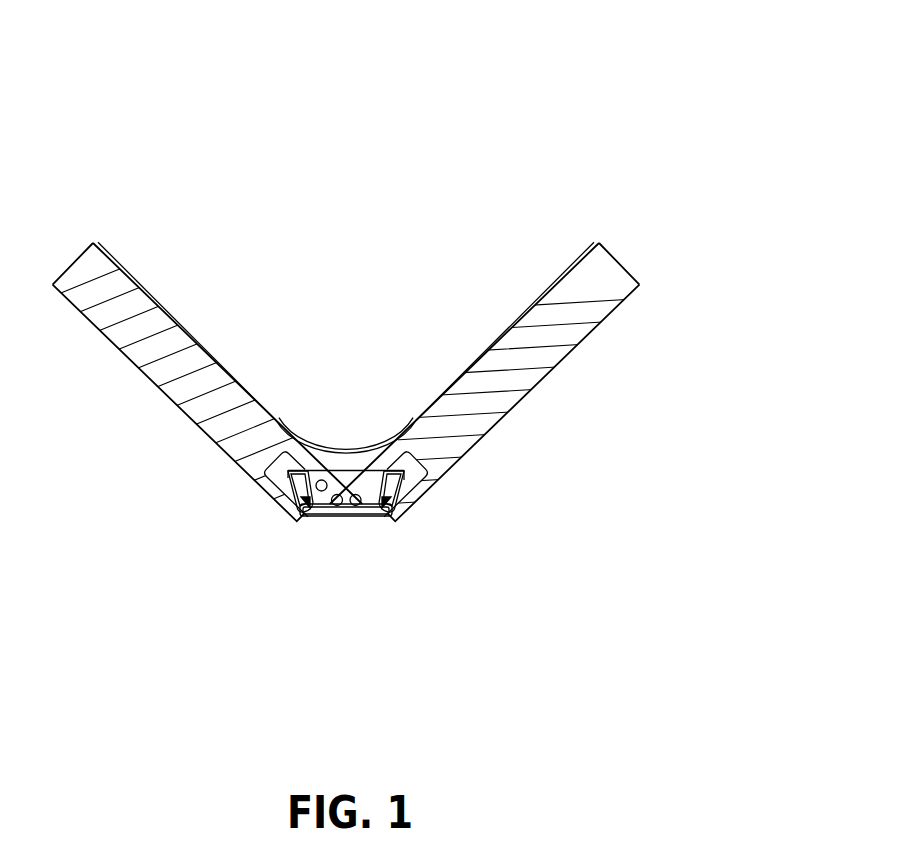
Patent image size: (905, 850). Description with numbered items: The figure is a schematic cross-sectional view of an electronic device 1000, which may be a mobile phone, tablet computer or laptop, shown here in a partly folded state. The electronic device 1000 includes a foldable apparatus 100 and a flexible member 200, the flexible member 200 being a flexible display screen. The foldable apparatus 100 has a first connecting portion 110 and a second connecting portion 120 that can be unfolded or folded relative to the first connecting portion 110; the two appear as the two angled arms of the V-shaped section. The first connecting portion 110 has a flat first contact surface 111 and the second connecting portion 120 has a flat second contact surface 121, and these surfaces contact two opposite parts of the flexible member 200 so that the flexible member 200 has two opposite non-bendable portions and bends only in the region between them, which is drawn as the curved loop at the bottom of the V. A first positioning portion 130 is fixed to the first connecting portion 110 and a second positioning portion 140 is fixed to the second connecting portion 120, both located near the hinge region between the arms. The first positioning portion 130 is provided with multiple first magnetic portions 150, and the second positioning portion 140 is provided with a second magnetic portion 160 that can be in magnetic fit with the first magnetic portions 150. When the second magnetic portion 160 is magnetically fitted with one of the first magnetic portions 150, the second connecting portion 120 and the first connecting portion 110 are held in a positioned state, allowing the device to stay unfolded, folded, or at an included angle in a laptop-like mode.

The electronic device 1000 is at (467, 128).
The foldable apparatus 100 is at (361, 558).
The first connecting portion 110 is at (176, 393).
The first contact surface 111 is at (121, 271).
The second connecting portion 120 is at (517, 400).
The second contact surface 121 is at (533, 288).
The first positioning portion 130 is at (268, 488).
The second positioning portion 140 is at (426, 490).
The first magnetic portions 150 is at (306, 516).
The second magnetic portion 160 is at (357, 508).
The flexible member 200 is at (192, 340).